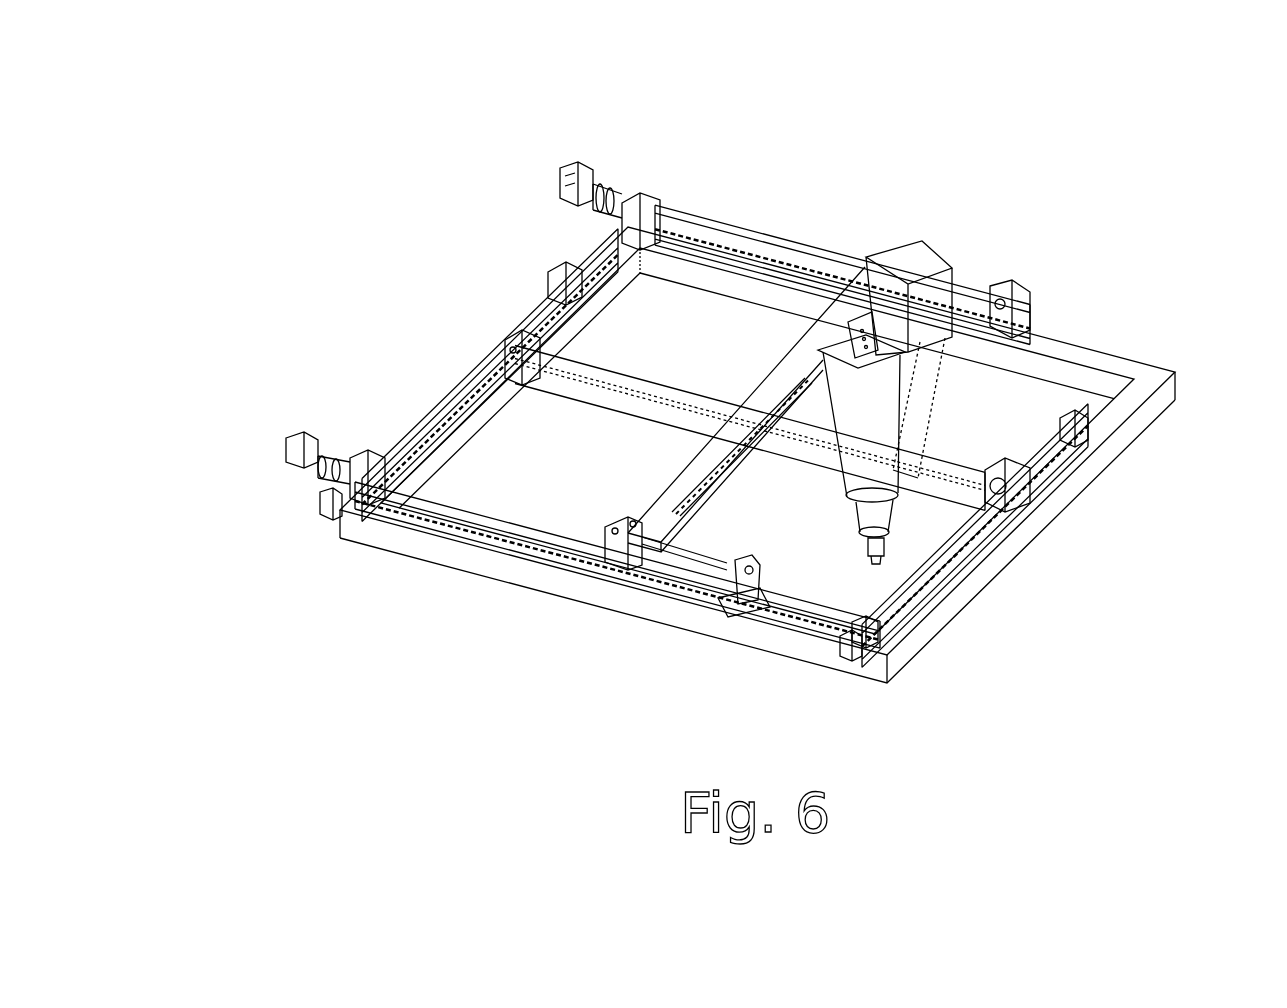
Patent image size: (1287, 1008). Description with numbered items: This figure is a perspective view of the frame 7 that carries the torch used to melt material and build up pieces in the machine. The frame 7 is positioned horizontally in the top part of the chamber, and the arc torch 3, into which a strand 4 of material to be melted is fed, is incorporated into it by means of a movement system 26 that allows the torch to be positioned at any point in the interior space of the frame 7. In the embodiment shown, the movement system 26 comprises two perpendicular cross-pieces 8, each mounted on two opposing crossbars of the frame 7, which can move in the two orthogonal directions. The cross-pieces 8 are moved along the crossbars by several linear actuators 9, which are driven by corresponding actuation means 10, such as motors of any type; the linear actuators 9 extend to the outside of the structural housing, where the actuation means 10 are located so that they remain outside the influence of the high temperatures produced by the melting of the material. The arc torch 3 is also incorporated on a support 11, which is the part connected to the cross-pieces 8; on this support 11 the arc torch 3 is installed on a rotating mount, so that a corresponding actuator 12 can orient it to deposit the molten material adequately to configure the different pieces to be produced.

The arc torch 3 is at (898, 545).
The strand 4 is at (932, 262).
The frame 7 is at (475, 578).
The cross-pieces 8 is at (630, 375).
The linear actuators 9 is at (773, 238).
The actuation means 10 is at (565, 185).
The support 11 is at (880, 400).
The actuator 12 is at (858, 503).
The movement system 26 is at (1058, 238).